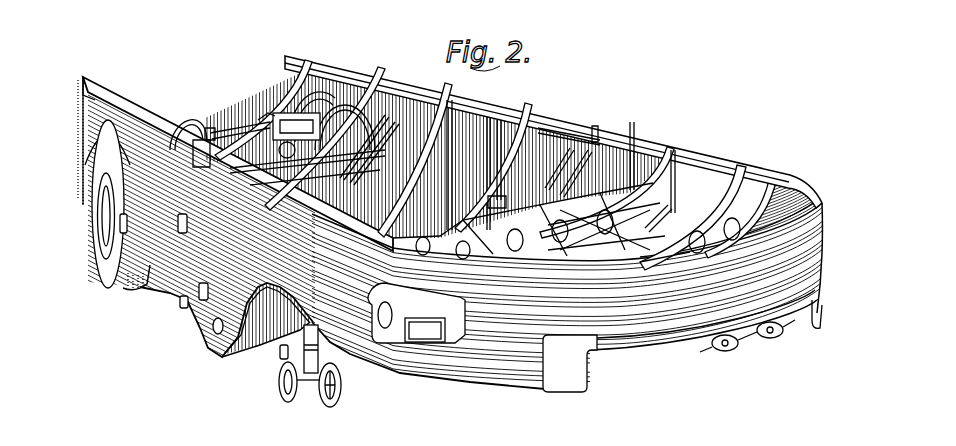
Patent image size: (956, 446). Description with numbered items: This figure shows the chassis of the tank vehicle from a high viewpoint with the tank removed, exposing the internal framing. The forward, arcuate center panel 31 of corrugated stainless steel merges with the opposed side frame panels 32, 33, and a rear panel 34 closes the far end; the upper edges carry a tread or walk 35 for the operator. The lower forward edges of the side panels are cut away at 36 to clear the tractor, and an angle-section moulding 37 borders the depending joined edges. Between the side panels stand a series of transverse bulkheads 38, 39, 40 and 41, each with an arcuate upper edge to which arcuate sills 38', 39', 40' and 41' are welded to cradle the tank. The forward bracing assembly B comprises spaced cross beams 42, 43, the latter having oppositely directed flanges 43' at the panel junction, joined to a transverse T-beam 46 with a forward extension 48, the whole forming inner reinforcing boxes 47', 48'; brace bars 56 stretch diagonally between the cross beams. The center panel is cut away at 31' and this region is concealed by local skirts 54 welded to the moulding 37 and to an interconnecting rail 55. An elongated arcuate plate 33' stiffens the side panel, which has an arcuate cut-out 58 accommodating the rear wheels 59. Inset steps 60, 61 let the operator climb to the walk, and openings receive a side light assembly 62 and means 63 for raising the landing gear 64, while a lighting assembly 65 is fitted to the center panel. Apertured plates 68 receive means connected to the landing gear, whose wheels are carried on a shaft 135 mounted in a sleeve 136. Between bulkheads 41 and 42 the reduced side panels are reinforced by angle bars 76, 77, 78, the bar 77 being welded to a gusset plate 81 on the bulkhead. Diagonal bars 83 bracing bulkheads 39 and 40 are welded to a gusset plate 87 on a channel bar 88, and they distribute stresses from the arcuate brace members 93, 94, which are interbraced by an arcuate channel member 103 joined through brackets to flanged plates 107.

The central arcuate frame or panel 31 is at (536, 297).
The cut-away portion of center panel 31' is at (739, 354).
The side frame panel 32 is at (489, 117).
The side frame panel 33 is at (185, 250).
The elongated arcuate plate 33' is at (707, 197).
The rear panel or frame 34 is at (298, 64).
The tread or walk 35 is at (222, 134).
The cut-away of side panel 36 is at (262, 332).
The moulding or trim 37 is at (195, 332).
The transverse bulkhead 38 is at (314, 108).
The arcuate sill 38' is at (284, 99).
The transverse bulkhead 39 is at (345, 127).
The arcuate sill 39' is at (329, 128).
The transverse bulkhead 40 is at (464, 152).
The arcuate sill 40' is at (418, 150).
The transverse bulkhead 41 is at (445, 274).
The arcuate sill 41' is at (500, 158).
The cross beam or bulkhead 42 is at (660, 150).
The cross beam or bulkhead 43 is at (714, 214).
The oppositely directed flanges 43' is at (540, 199).
The T-beam member 46 is at (607, 236).
The inner reinforcing box 47' is at (604, 218).
The forward extension of T-beam 48 is at (615, 235).
The inner reinforcing box 48' is at (665, 264).
The local skirt or moulding 54 is at (560, 373).
The interconnecting rail 55 is at (625, 352).
The brace bar 56 is at (675, 220).
The arcuate cut-out portion 58 is at (102, 116).
The rear wheel 59 is at (115, 283).
The inset pocket or step 60 is at (500, 130).
The inset pocket or step 61 is at (183, 303).
The side light opening 62 is at (213, 332).
The landing gear raising and lowering means 63 is at (198, 302).
The landing gear 64 is at (345, 397).
The lighting assembly 65 is at (430, 343).
The plate 68 is at (289, 348).
The angle bar 76 is at (588, 150).
The angle bar 77 is at (572, 148).
The angle bar 78 is at (632, 128).
The gusset plate 81 is at (552, 130).
The diagonal bar or member 83 is at (396, 125).
The gusset plate 87 is at (307, 163).
The channel bar 88 is at (385, 118).
The arcuate brace member 93 is at (183, 114).
The arcuate brace member 94 is at (262, 118).
The arcuate cross or channel member 103 is at (248, 125).
The flanged plate 107 is at (270, 112).
The shaft 135 is at (280, 368).
The sleeve 136 is at (330, 350).
The bracing assembly B is at (690, 160).